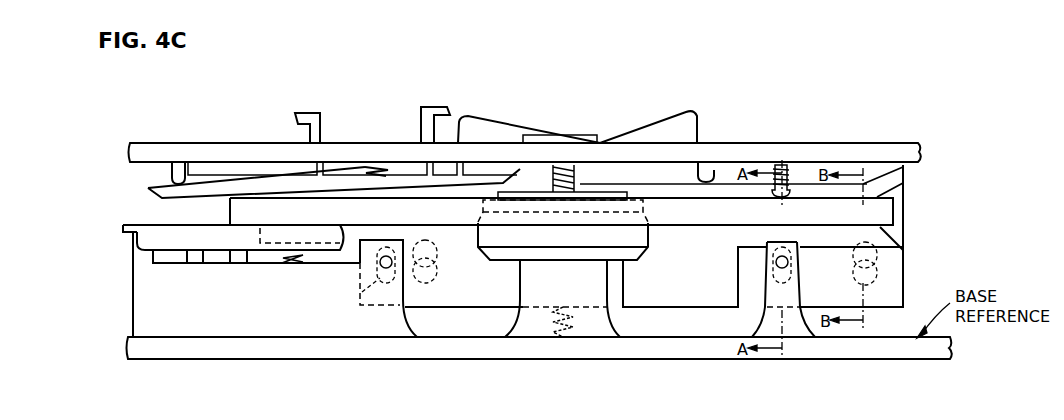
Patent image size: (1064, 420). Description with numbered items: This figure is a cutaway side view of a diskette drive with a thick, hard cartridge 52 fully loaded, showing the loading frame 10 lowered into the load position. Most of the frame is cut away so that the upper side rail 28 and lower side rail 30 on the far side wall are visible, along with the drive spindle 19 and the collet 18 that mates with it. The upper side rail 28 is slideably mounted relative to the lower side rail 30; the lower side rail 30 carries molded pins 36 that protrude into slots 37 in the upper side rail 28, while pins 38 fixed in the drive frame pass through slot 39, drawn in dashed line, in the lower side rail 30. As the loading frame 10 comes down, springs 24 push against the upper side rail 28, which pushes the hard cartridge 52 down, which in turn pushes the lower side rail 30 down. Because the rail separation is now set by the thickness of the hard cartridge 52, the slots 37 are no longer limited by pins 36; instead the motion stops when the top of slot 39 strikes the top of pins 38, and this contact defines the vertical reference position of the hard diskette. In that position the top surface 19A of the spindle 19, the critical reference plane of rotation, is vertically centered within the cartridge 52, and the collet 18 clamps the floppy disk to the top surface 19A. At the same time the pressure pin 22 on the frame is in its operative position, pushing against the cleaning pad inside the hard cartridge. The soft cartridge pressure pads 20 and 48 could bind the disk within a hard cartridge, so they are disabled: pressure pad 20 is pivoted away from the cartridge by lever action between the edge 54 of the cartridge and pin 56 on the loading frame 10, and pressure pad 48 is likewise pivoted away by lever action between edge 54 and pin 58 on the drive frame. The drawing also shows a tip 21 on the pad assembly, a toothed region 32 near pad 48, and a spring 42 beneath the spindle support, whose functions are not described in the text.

The loading frame 10 is at (757, 152).
The collet 18 is at (607, 195).
The drive spindle 19 is at (637, 238).
The top surface of the drive spindle 19A is at (612, 205).
The soft cartridge pressure pad 20 is at (227, 190).
The spring finger tip 21 is at (367, 168).
The pressure pin 22 is at (784, 192).
The springs 24 is at (698, 119).
The upper side rail 28 is at (904, 176).
The lower side rail 30 is at (904, 257).
The comb teeth 32 is at (230, 261).
The pins 36 is at (438, 271).
The slots 37 is at (438, 250).
The pins 38 is at (379, 265).
The slot 39 is at (362, 300).
The spring 42 is at (582, 335).
The soft cartridge pressure pad 48 is at (170, 231).
The hard cartridge 52 is at (882, 217).
The edge of the hard cartridge 54 is at (230, 211).
The pin on loading frame 56 is at (173, 177).
The pin on the drive frame 58 is at (138, 249).